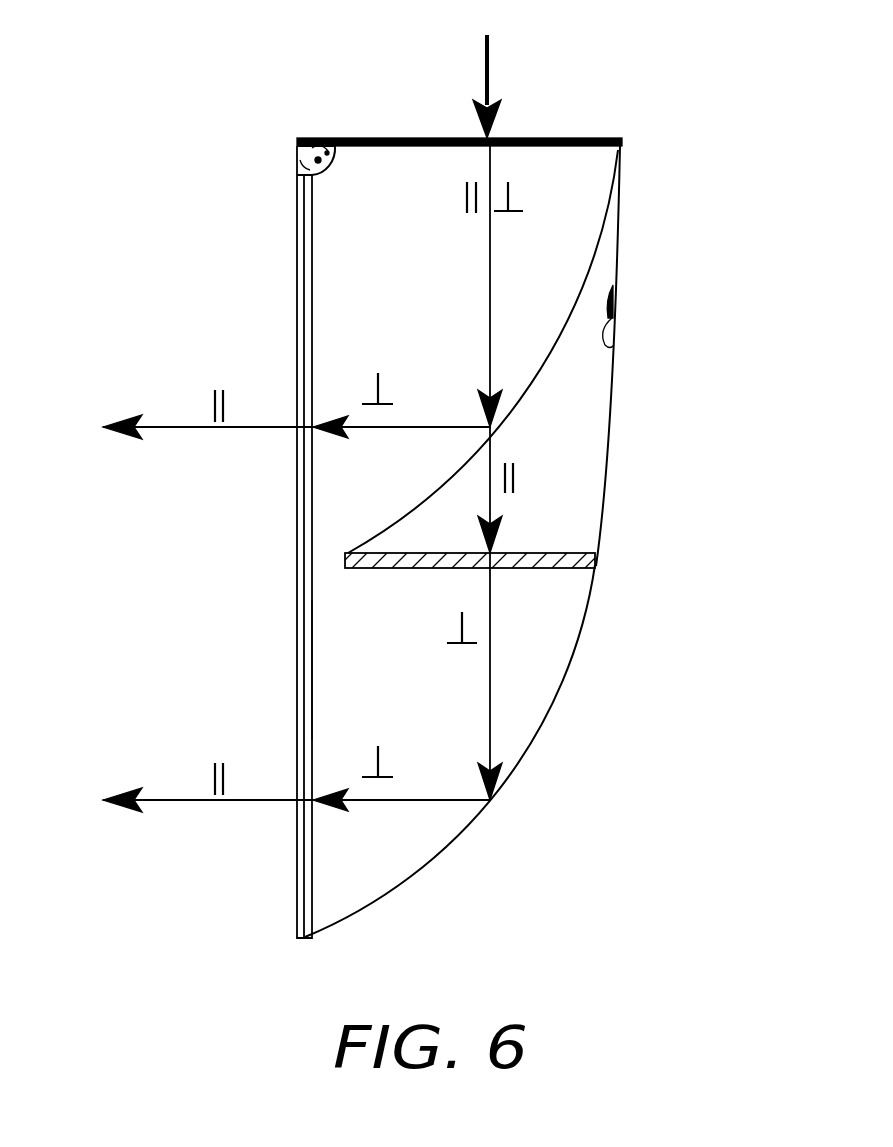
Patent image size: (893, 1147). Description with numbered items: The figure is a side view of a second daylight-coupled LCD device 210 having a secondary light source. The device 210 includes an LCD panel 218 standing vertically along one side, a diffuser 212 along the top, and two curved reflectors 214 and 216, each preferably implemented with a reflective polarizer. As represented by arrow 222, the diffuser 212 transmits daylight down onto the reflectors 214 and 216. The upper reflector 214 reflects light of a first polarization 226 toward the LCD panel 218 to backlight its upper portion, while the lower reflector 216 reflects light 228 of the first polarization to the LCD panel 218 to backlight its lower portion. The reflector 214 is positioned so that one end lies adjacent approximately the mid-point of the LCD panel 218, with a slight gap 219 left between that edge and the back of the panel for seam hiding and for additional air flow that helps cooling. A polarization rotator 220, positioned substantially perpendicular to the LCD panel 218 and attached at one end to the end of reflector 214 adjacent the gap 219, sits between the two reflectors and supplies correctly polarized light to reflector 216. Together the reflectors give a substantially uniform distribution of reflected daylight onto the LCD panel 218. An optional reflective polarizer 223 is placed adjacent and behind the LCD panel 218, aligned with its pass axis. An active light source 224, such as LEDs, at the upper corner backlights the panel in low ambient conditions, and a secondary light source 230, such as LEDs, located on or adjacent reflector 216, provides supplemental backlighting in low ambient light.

The daylight-coupled LCD device 210 is at (628, 72).
The diffuser 212 is at (570, 138).
The curved reflector 214 is at (533, 383).
The curved reflector 216 is at (545, 713).
The LCD panel 218 is at (298, 297).
The gap 219 is at (330, 560).
The polarization rotator 220 is at (553, 568).
The arrow 222 is at (478, 58).
The reflective polarizer 223 is at (312, 666).
The active light source 224 is at (308, 140).
The light of a first polarization 226 is at (434, 425).
The light of the first polarization 228 is at (437, 797).
The secondary light source 230 is at (612, 344).